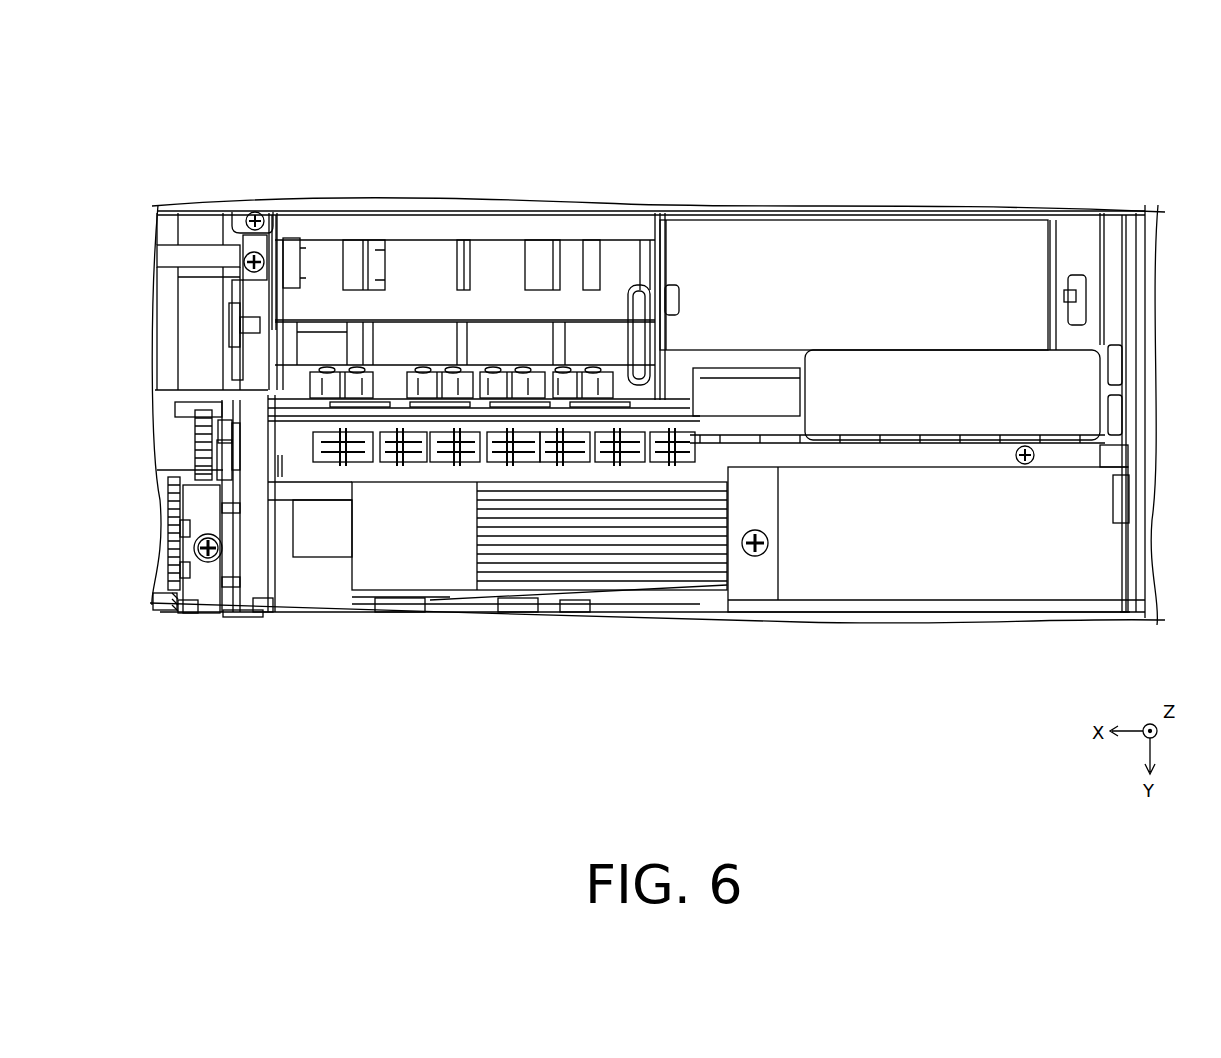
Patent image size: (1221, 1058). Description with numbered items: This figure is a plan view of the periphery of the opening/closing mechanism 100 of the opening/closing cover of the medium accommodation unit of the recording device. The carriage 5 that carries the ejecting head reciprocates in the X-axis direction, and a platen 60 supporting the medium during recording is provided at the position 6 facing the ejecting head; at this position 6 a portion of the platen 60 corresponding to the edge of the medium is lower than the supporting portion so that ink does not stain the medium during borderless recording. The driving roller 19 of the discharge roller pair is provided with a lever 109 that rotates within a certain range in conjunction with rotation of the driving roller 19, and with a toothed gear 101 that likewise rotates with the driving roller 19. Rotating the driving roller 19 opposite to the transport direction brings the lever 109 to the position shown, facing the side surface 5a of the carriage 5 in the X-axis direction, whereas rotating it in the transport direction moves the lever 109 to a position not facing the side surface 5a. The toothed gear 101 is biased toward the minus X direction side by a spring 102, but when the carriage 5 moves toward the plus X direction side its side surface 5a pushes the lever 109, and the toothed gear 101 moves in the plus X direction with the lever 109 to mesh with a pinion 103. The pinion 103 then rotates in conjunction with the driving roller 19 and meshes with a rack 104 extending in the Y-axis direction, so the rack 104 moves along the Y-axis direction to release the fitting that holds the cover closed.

The opening/closing mechanism 100 is at (1125, 106).
The carriage 5 is at (795, 245).
The side surface 5a is at (640, 473).
The position facing the ejecting head 6 is at (483, 263).
The platen 60 is at (423, 347).
The driving roller 19 is at (253, 445).
The toothed gear 101 is at (200, 400).
The spring 102 is at (160, 440).
The pinion 103 is at (178, 607).
The rack 104 is at (236, 600).
The lever 109 is at (255, 215).